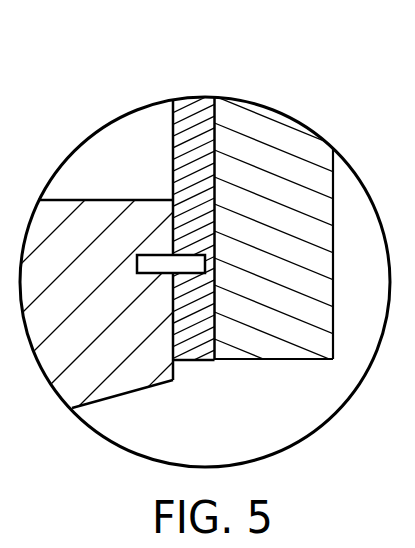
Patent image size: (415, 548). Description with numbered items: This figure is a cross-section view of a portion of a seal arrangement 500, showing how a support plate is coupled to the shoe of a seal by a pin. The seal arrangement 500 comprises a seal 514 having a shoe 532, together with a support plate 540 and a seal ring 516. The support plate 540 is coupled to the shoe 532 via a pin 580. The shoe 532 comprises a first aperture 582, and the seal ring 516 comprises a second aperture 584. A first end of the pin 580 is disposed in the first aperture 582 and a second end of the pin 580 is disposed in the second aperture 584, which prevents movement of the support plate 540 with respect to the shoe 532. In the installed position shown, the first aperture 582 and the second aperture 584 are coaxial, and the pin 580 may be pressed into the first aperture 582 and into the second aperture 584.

The seal arrangement 500 is at (337, 84).
The seal 514 is at (67, 200).
The seal ring 516 is at (272, 135).
The shoe 532 is at (113, 268).
The support plate 540 is at (188, 115).
The pin 580 is at (163, 260).
The first aperture 582 is at (153, 277).
The second aperture 584 is at (197, 280).